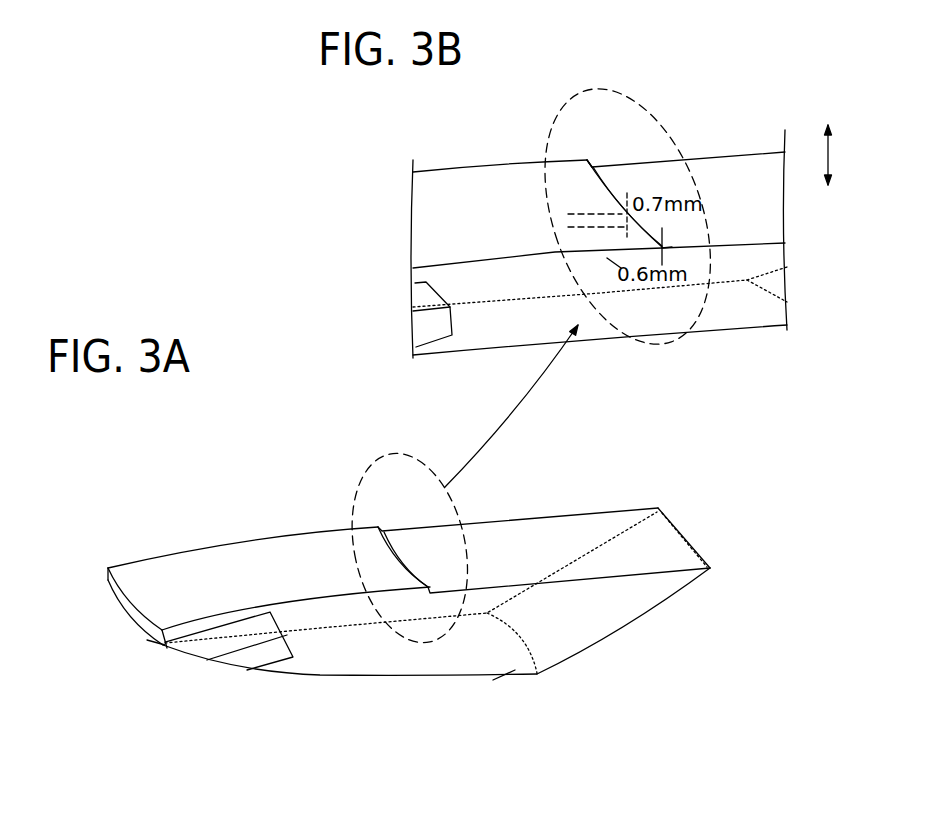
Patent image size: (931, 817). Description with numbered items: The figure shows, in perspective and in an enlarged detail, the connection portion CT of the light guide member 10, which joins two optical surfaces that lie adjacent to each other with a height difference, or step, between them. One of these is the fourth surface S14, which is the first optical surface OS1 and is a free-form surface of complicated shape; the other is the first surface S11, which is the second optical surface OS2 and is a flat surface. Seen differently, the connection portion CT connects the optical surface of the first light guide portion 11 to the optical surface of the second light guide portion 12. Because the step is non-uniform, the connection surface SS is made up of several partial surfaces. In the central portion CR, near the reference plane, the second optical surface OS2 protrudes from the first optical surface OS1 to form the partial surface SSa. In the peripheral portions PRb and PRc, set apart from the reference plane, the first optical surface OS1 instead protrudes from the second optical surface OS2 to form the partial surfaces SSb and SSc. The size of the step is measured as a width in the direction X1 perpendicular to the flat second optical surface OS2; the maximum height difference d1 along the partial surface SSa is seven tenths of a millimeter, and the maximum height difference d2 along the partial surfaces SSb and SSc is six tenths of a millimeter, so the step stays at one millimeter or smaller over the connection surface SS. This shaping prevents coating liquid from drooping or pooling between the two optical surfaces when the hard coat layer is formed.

In FIG. 3A, the light guide member 10 is at (212, 474).
In FIG. 3A, the first light guide portion 11 is at (510, 670).
In FIG. 3A, the second light guide portion 12 is at (318, 658).
In FIG. 3B, the connection portion CT is at (593, 118).
In FIG. 3A, the connection portion CT is at (372, 505).
In FIG. 3B, the connection surface SS is at (658, 134).
In FIG. 3A, the connection surface SS is at (395, 555).
In FIG. 3A, the fourth surface S14 is at (263, 562).
In FIG. 3A, the first surface S11 is at (538, 538).
In FIG. 3B, the first optical surface OS1 is at (468, 197).
In FIG. 3B, the second optical surface OS2 is at (730, 173).
In FIG. 3B, the direction X1 is at (845, 155).
In FIG. 3B, the partial surface SSa is at (622, 206).
In FIG. 3B, the partial surface SSb is at (593, 160).
In FIG. 3B, the partial surface SSc is at (672, 246).
In FIG. 3B, the peripheral portion PRb is at (582, 174).
In FIG. 3B, the peripheral portion PRc is at (607, 257).
In FIG. 3B, the central portion CR is at (568, 213).
In FIG. 3B, the maximum height difference d1 is at (596, 210).
In FIG. 3B, the maximum height difference d2 is at (676, 245).